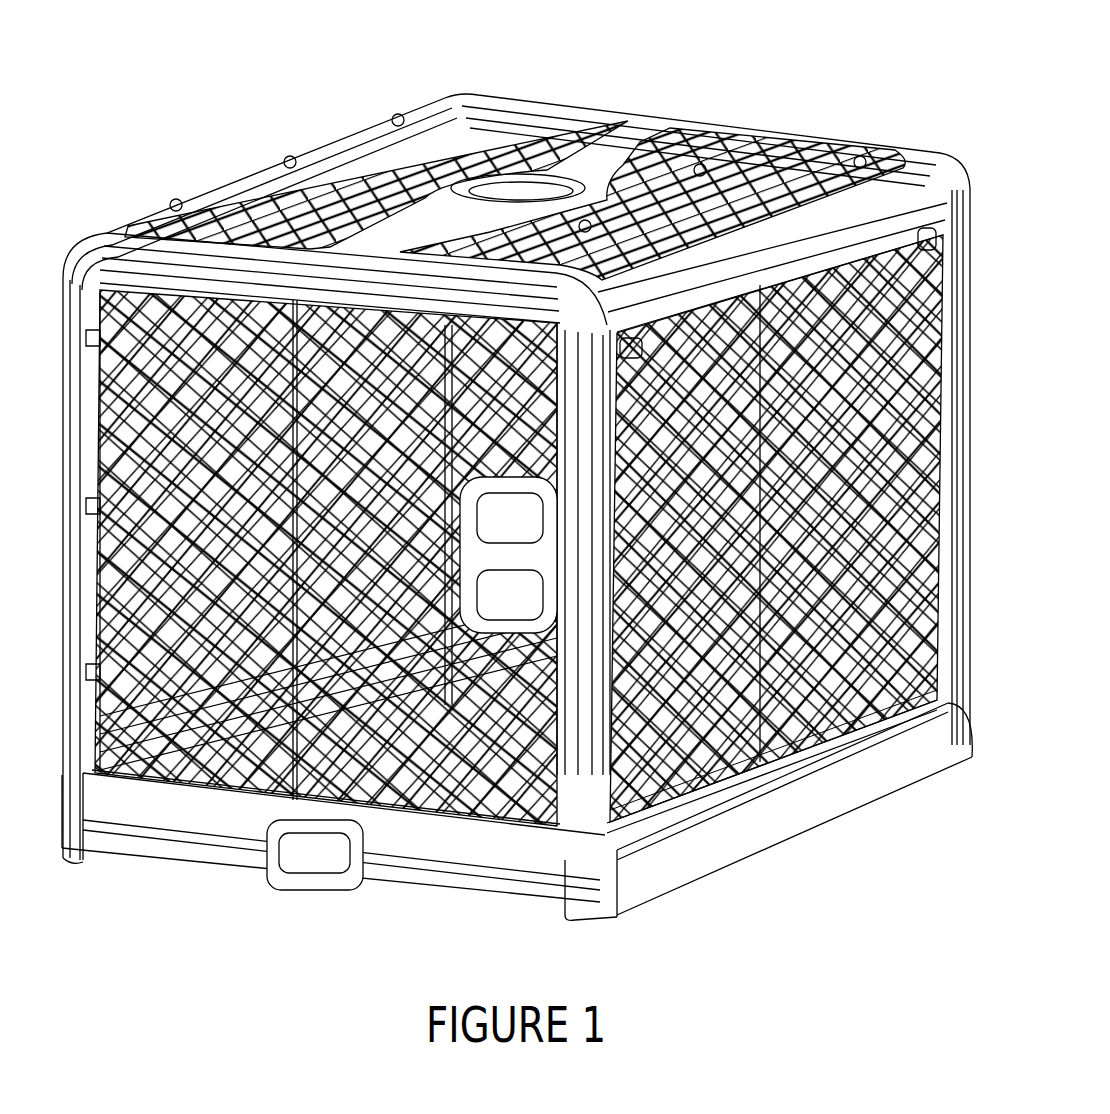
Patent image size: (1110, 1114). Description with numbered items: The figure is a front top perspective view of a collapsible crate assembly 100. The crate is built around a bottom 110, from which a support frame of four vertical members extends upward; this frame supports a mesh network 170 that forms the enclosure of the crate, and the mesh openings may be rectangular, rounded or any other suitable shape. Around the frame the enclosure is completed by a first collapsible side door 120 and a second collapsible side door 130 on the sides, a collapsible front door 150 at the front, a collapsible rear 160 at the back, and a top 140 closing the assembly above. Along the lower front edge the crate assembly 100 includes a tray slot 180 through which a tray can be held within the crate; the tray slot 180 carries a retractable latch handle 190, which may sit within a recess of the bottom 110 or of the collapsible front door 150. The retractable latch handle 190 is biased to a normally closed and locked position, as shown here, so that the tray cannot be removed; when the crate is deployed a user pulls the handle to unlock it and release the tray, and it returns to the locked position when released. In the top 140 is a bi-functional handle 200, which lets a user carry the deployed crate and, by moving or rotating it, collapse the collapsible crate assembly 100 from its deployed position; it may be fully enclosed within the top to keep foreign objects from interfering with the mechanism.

The collapsible crate assembly 100 is at (262, 105).
The bottom 110 is at (648, 873).
The first collapsible side door 120 is at (793, 747).
The second collapsible side door 130 is at (169, 184).
The top 140 is at (676, 122).
The collapsible front door 150 is at (150, 807).
The collapsible rear 160 is at (888, 89).
The mesh network 170 is at (832, 509).
The tray slot 180 is at (470, 880).
The retractable latch handle 190 is at (290, 877).
The bi-functional handle 200 is at (527, 188).